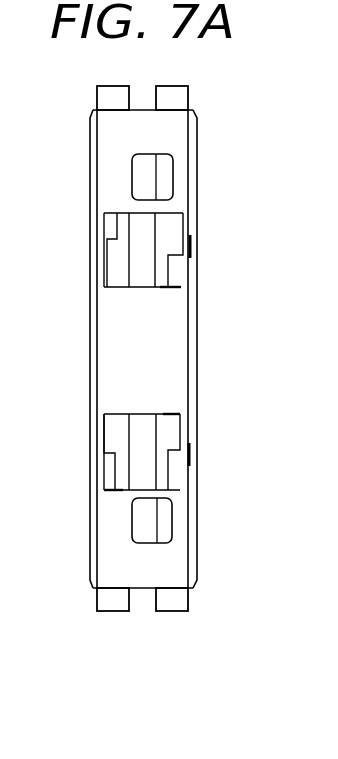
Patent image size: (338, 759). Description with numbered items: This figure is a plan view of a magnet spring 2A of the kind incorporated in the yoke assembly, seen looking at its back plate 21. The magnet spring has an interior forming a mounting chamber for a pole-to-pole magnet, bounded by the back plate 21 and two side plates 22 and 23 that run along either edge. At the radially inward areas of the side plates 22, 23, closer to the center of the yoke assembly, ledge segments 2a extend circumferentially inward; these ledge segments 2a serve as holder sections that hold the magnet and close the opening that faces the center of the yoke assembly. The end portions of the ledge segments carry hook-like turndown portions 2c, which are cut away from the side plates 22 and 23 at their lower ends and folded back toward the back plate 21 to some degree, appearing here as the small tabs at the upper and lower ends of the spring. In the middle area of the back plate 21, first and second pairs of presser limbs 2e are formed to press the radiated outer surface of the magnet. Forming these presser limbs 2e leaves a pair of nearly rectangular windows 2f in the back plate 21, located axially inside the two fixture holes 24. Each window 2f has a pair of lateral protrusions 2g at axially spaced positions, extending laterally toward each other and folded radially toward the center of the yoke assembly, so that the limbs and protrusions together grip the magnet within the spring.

The battery pack / cell assembly 2A is at (221, 117).
The ledge segment 2a is at (113, 620).
The turndown portion 2c is at (108, 94).
The presser limb 2e is at (112, 237).
The window 2f is at (170, 218).
The lateral protrusion 2g is at (190, 262).
The back plate 21 is at (166, 378).
The side plate 22 is at (196, 331).
The side plate 23 is at (89, 357).
The fixture hole 24 is at (143, 174).